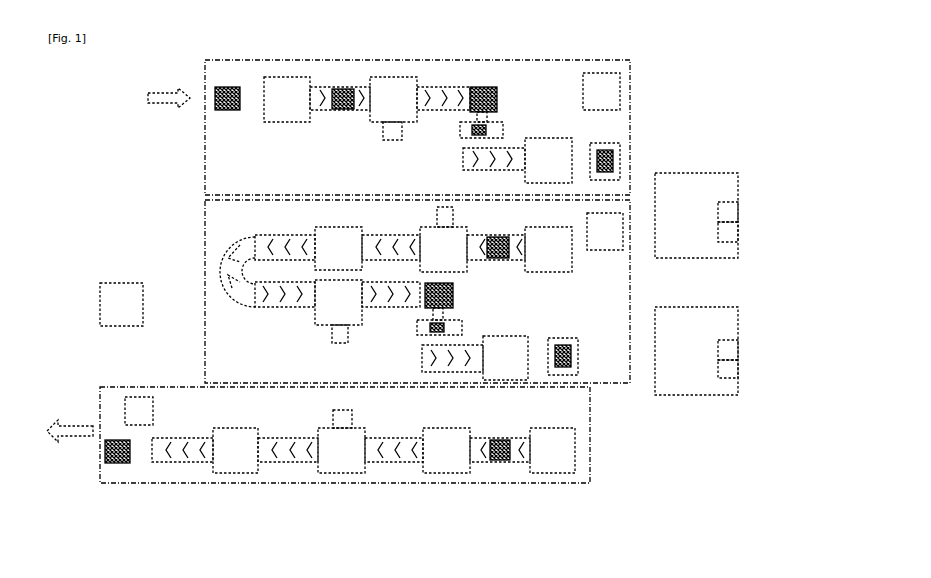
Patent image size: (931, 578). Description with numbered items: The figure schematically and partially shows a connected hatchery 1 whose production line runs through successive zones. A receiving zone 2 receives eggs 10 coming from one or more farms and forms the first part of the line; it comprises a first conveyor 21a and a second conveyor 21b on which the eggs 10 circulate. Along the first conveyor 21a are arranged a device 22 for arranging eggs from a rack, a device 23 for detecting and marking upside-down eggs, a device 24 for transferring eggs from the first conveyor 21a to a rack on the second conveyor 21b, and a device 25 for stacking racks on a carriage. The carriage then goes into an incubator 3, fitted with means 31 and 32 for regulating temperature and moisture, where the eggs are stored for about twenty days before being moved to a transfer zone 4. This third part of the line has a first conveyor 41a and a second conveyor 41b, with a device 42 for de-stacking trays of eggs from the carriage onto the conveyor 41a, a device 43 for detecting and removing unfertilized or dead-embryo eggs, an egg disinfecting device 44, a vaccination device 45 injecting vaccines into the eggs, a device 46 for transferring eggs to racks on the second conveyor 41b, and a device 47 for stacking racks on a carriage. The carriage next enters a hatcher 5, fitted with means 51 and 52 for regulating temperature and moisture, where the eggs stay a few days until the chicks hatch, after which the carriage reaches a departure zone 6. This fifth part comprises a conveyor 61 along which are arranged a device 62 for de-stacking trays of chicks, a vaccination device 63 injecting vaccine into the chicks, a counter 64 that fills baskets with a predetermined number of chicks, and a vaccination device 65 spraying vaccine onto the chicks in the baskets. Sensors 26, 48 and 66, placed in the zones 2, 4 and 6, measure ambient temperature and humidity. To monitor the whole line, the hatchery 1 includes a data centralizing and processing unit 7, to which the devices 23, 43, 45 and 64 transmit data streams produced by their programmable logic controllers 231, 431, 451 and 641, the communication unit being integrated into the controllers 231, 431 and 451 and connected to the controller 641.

The connected hatchery 1 is at (103, 160).
The receiving zone 2 is at (417, 127).
The eggs 10 is at (228, 117).
The device for arranging eggs from a rack 22 is at (287, 99).
The first conveyor 21a is at (325, 114).
The device for detecting upside-down eggs 23 is at (393, 99).
The programmable logic controller 231 is at (389, 144).
The device for transferring eggs 24 is at (500, 99).
The second conveyor 21b is at (460, 161).
The device for stacking racks on a carriage 25 is at (548, 160).
The sensor 26 is at (601, 91).
The incubator 3 is at (696, 215).
The means for regulating temperature and moisture 31 is at (736, 212).
The means for regulating temperature and moisture 32 is at (736, 233).
The transfer zone 4 is at (417, 291).
The first conveyor 41a is at (263, 243).
The second conveyor 41b is at (421, 359).
The device for de-stacking trays 42 is at (548, 249).
The device for detecting unfertilized eggs 43 is at (443, 249).
The programmable logic controller 431 is at (434, 217).
The egg disinfecting device 44 is at (338, 248).
The vaccination device 45 is at (338, 302).
The programmable logic controller 451 is at (329, 336).
The device for transferring eggs 46 is at (605, 231).
The device for stacking racks on a carriage 47 is at (505, 358).
The sensor 48 is at (456, 296).
The hatcher 5 is at (696, 351).
The means for regulating temperature and moisture 51 is at (736, 347).
The means for regulating temperature and moisture 52 is at (736, 368).
The departure zone 6 is at (345, 435).
The conveyor 61 is at (493, 433).
The device for de-stacking trays 62 is at (552, 450).
The vaccination device 63 is at (446, 450).
The counter 64 is at (341, 450).
The programmable logic controller 641 is at (330, 418).
The vaccination device 65 is at (235, 450).
The sensor 66 is at (139, 411).
The data centralizing and processing unit 7 is at (121, 304).